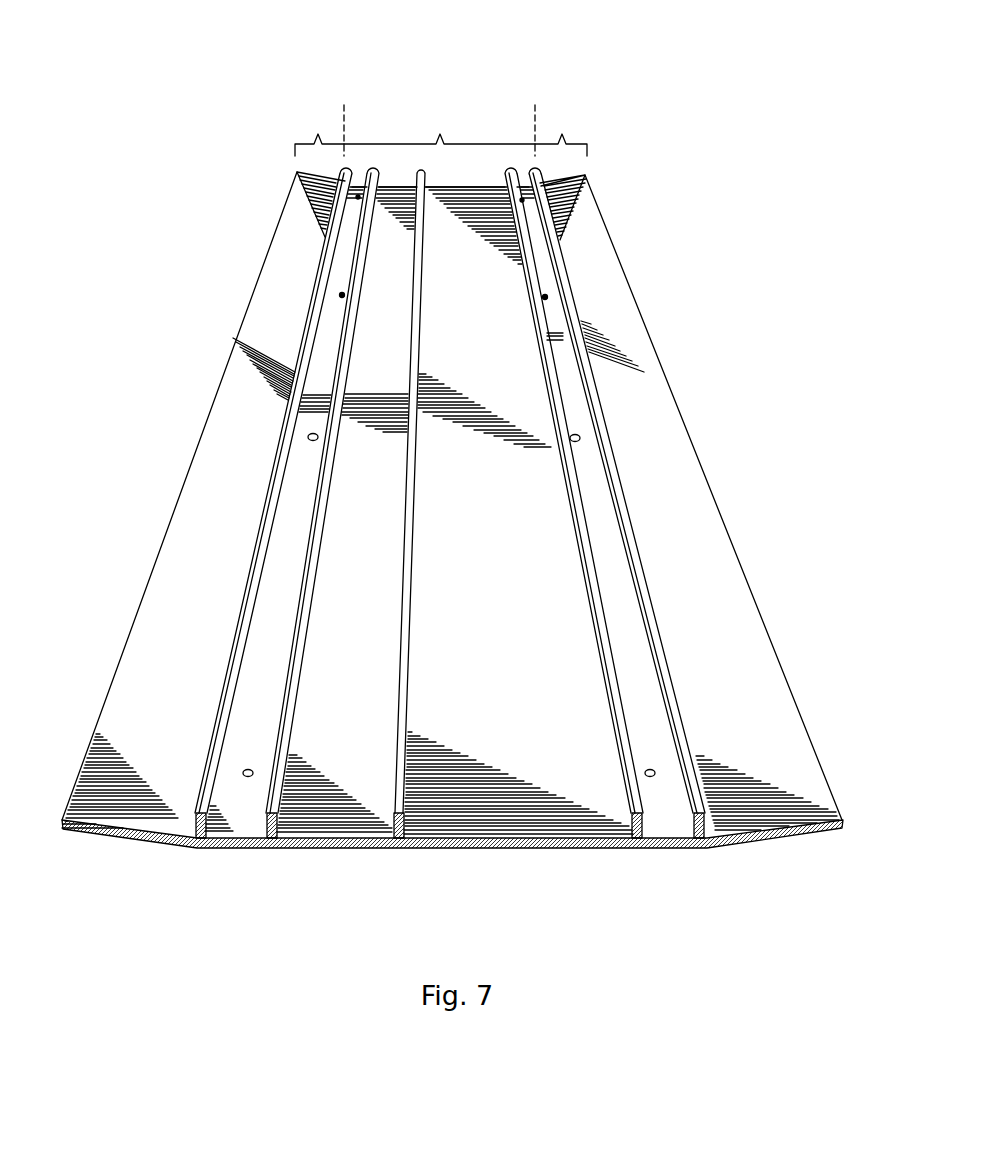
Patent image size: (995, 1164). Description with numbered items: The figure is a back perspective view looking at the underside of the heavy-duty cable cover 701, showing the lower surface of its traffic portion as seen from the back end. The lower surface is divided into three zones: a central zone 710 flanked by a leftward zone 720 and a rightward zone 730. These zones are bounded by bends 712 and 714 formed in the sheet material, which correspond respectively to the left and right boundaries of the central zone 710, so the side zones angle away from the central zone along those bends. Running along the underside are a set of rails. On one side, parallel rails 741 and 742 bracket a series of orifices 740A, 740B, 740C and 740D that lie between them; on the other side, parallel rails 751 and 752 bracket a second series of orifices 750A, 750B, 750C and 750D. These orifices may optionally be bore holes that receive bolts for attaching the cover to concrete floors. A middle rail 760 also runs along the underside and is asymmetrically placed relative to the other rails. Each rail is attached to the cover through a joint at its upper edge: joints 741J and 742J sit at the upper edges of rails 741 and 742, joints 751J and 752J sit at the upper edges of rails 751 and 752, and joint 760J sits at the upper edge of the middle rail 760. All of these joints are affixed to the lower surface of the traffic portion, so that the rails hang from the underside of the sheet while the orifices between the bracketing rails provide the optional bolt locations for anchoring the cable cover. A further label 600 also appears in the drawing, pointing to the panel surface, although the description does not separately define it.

The panel 600 is at (452, 496).
The heavy-duty cable cover 701 is at (684, 376).
The central zone 710 is at (419, 446).
The bend 712 is at (589, 87).
The bend 714 is at (292, 82).
The leftward zone 720 is at (687, 437).
The rightward zone 730 is at (203, 430).
The orifice 740A is at (627, 224).
The orifice 740B is at (643, 310).
The orifice 740C is at (675, 448).
The orifice 740D is at (742, 719).
The parallel rail 741 is at (683, 530).
The joint 741J is at (752, 876).
The parallel rail 742 is at (574, 532).
The joint 742J is at (603, 870).
The orifice 750A is at (258, 227).
The orifice 750B is at (244, 307).
The orifice 750C is at (212, 447).
The orifice 750D is at (154, 720).
The parallel rail 751 is at (209, 528).
The joint 751J is at (138, 865).
The parallel rail 752 is at (327, 538).
The joint 752J is at (306, 865).
The middle rail 760 is at (455, 541).
The joint 760J is at (430, 875).